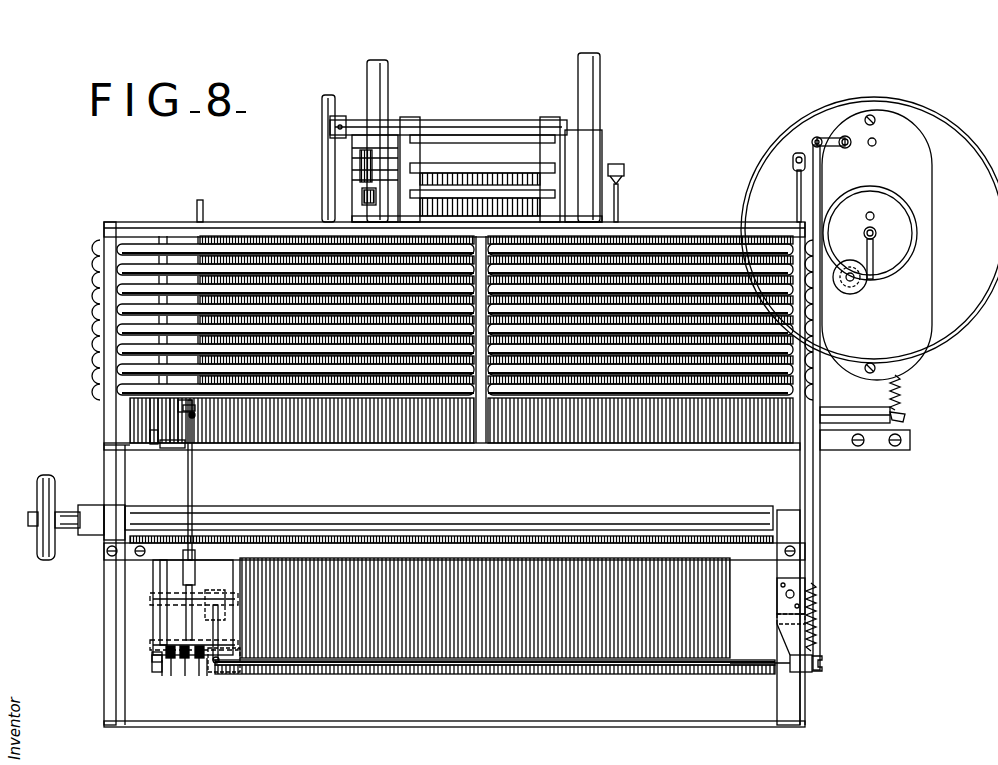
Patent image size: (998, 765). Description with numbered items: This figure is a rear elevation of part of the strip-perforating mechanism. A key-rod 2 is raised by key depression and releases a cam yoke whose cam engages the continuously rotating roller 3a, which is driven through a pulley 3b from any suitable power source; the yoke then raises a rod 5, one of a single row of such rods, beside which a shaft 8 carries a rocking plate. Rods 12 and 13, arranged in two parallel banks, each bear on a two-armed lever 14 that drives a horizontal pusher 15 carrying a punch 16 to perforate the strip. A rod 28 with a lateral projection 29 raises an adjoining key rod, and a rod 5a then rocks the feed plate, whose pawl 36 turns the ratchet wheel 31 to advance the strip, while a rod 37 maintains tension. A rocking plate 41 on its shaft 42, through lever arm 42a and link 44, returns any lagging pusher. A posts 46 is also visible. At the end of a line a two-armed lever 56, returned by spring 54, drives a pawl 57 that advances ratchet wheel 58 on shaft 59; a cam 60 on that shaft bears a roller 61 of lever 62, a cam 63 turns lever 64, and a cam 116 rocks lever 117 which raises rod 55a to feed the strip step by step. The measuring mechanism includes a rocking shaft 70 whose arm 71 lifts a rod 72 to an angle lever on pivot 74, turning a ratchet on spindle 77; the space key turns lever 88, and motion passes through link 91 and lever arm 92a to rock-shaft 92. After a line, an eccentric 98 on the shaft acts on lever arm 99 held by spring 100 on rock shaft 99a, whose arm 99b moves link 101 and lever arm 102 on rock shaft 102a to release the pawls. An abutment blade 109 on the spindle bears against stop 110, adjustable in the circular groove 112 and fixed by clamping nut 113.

The key-rod 2 is at (524, 670).
The roller 3a is at (488, 514).
The pulley 3b is at (42, 480).
The rod 5 is at (312, 440).
The rod 5a is at (160, 440).
The shaft 8 is at (134, 395).
The rod 12 is at (400, 222).
The rod 13 is at (606, 220).
The two-armed lever 14 is at (485, 194).
The pusher 15 is at (464, 176).
The punch 16 is at (388, 82).
The rod 28 is at (152, 438).
The lateral projection 29 is at (160, 674).
The ratchet wheel 31 is at (355, 178).
The pawl 36 is at (320, 208).
The rod 37 is at (322, 104).
The rocking plate 41 is at (445, 135).
The shaft 42 is at (485, 122).
The lever arm 42a is at (340, 116).
The link 44 is at (340, 166).
The post 46 is at (578, 90).
The spring 54 is at (196, 418).
The rod 55a is at (180, 450).
The two-armed lever 56 is at (178, 408).
The pawl 57 is at (193, 488).
The ratchet wheel 58 is at (152, 644).
The shaft 59 is at (152, 602).
The cam 60 is at (170, 620).
The roller 61 is at (171, 674).
The lever 62 is at (185, 676).
The cam 63 is at (199, 676).
The lever 64 is at (207, 676).
The rocking shaft 70 is at (834, 412).
The arm 71 is at (907, 419).
The rod 72 is at (903, 395).
The pivot 74 is at (875, 216).
The spindle 77 is at (877, 233).
The lever 88 is at (199, 200).
The link 91 is at (869, 230).
The rock-shaft 92 is at (875, 146).
The lever arm 92a is at (797, 153).
The eccentric 98 is at (205, 595).
The lever arm 99 is at (213, 640).
The rock shaft 99a is at (412, 670).
The arm 99b is at (812, 674).
The spring 100 is at (816, 616).
The link 101 is at (821, 522).
The lever arm 102 is at (817, 137).
The rock shaft 102a is at (845, 148).
The abutment blade 109 is at (874, 256).
The stop 110 is at (860, 287).
The circular groove 112 is at (922, 270).
The clamping nut 113 is at (848, 292).
The cam 116 is at (155, 575).
The lever 117 is at (154, 664).